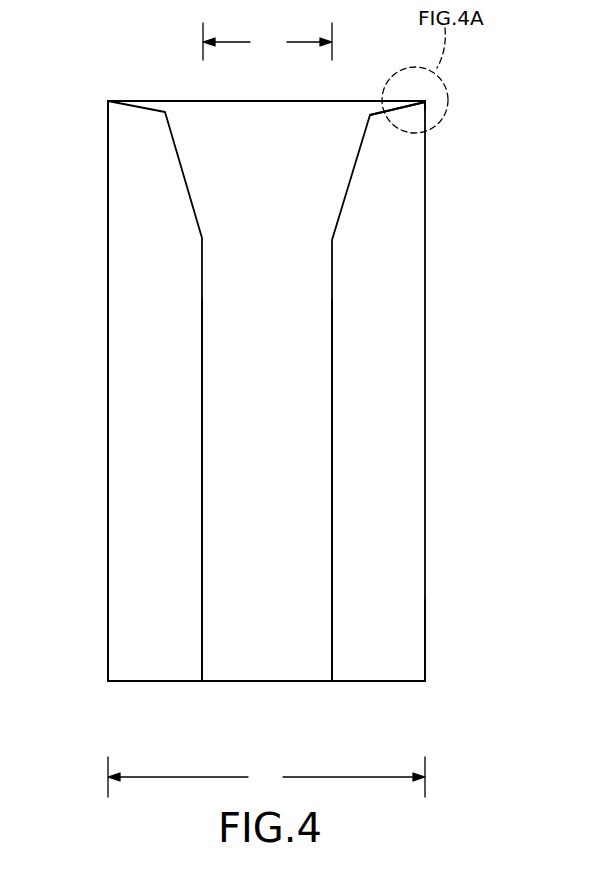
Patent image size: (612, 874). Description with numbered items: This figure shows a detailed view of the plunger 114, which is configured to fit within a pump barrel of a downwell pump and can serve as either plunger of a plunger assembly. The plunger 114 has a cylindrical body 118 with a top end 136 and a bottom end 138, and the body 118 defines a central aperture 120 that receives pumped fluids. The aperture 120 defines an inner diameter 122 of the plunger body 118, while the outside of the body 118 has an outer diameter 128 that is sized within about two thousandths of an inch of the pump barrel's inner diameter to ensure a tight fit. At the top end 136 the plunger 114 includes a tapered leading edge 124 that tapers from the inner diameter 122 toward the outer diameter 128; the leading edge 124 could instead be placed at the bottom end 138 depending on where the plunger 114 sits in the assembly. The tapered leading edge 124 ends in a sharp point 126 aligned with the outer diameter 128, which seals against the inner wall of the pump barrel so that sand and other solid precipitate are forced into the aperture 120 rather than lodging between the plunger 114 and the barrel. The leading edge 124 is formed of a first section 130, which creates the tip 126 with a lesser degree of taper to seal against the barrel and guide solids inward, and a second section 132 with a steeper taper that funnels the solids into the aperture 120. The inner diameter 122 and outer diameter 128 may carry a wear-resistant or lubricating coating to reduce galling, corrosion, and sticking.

The plunger 114 is at (311, 694).
The cylindrical body 118 is at (426, 233).
The aperture 120 is at (252, 664).
The inner diameter 122 is at (267, 41).
The tapered leading edge 124 is at (158, 204).
The sharp point 126 is at (427, 104).
The outer diameter 128 is at (266, 777).
The first section 130 is at (393, 108).
The second section 132 is at (348, 187).
The top end 136 is at (88, 118).
The bottom end 138 is at (436, 682).